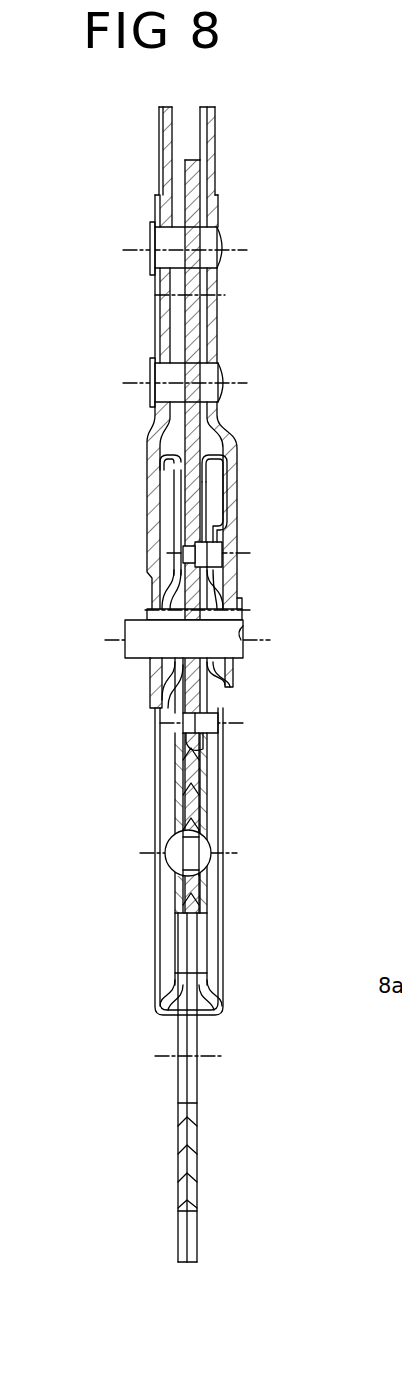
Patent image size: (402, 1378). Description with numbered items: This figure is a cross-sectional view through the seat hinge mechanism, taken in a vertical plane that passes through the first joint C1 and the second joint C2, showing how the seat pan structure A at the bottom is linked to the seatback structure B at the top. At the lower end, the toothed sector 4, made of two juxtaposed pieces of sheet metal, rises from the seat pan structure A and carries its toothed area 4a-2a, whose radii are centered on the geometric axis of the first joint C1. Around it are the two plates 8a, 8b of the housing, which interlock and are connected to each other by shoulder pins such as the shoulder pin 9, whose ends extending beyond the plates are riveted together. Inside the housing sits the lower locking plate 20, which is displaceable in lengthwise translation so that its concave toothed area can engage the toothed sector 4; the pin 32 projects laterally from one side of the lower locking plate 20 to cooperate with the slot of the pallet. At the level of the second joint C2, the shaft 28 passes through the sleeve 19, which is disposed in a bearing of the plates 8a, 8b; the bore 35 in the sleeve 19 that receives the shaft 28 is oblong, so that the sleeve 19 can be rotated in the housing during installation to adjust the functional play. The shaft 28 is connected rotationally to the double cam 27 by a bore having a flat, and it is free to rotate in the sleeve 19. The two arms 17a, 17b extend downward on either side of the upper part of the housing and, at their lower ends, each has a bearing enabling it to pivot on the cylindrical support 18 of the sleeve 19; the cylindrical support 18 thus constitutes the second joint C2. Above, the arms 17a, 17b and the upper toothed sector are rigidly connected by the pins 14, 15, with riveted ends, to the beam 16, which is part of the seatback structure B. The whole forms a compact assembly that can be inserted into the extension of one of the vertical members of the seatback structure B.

The toothed sector 4 is at (180, 1135).
The rod section 4a-2a is at (205, 775).
The plate of housing 8a is at (205, 810).
The plate of housing 8b is at (175, 805).
The shoulder pin 9 is at (165, 860).
The pin 14 is at (207, 245).
The pin 15 is at (205, 385).
The beam 16 is at (205, 138).
The arm 17a is at (147, 448).
The arm 17b is at (230, 450).
The cylindrical support 18 is at (243, 612).
The sleeve 19 is at (240, 670).
The lower locking plate 20 is at (205, 750).
The double cam 27 is at (175, 588).
The shaft 28 is at (143, 647).
The pin 32 is at (175, 722).
The bore 35 is at (243, 633).
The seat pan structure A is at (140, 1058).
The seatback structure B is at (100, 285).
The first joint C1 is at (223, 942).
The second joint C2 is at (124, 633).